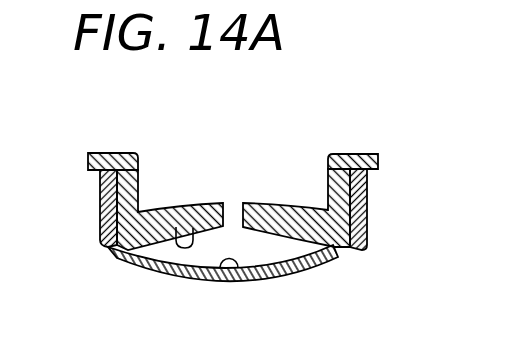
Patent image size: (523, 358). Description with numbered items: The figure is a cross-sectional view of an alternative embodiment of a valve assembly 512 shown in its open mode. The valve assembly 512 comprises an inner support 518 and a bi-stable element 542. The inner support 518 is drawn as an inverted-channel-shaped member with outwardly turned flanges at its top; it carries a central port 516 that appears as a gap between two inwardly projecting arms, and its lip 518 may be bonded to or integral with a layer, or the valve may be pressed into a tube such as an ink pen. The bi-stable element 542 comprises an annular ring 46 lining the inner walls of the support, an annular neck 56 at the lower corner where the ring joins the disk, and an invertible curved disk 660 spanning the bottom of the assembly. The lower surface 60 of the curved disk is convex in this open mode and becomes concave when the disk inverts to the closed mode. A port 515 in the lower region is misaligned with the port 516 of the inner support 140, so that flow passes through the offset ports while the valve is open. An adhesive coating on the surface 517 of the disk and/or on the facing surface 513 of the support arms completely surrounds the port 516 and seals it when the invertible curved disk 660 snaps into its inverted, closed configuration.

The valve assembly 512 is at (343, 127).
The inner support 518 is at (88, 162).
The annular ring 46 is at (102, 218).
The inner support 140 is at (378, 152).
The bi-stable element 542 is at (368, 220).
The lower surface 60 is at (312, 272).
The facing surface 513 is at (191, 230).
The port 516 is at (235, 192).
The surface 517 is at (242, 270).
The invertible curved disk 660 is at (193, 282).
The annular neck 56 is at (107, 249).
The port 515 is at (148, 275).